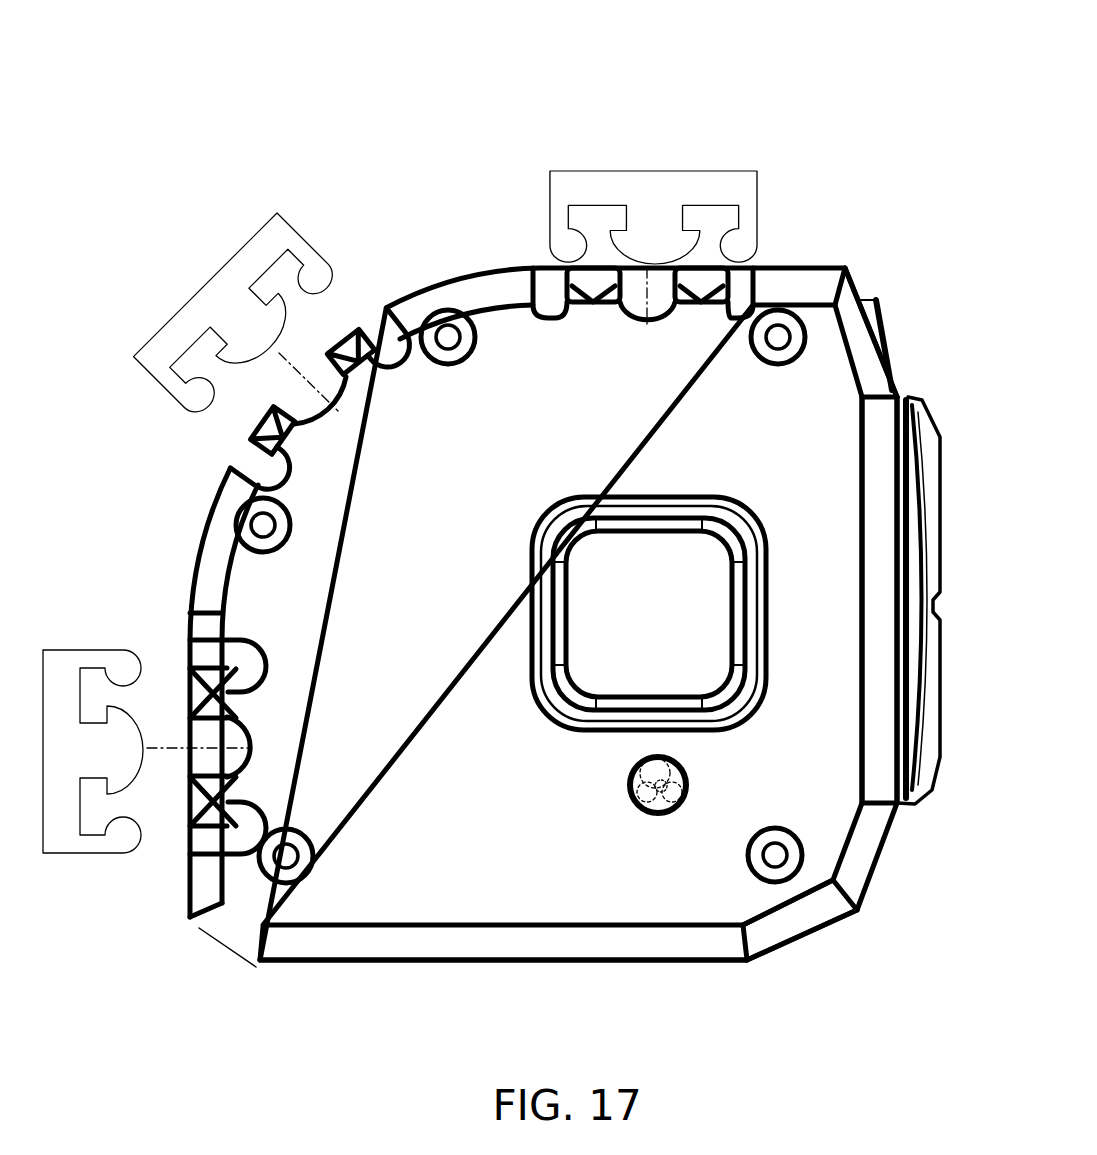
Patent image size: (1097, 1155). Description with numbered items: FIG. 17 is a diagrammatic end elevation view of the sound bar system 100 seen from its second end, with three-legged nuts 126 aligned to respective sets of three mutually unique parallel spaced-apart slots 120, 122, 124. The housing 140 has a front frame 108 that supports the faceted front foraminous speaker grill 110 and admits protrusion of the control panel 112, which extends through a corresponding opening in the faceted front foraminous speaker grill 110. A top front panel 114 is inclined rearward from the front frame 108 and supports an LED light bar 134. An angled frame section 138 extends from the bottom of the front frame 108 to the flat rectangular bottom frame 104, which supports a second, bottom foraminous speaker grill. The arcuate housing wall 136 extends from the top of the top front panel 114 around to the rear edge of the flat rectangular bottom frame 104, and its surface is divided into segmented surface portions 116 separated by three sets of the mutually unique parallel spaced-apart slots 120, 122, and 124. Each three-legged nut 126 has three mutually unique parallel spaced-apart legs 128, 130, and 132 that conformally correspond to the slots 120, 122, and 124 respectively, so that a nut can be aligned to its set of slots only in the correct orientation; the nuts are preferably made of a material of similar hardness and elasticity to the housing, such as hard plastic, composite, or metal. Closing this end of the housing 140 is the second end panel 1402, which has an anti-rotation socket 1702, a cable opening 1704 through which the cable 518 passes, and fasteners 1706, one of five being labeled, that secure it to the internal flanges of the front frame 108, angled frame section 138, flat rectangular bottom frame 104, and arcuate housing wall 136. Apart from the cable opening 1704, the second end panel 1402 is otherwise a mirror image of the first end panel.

The sound bar system 100 is at (845, 33).
The flat rectangular bottom frame 104 is at (565, 943).
The front frame 108 is at (877, 452).
The faceted front foraminous speaker grill 110 is at (907, 590).
The control panel 112 is at (937, 703).
The top front panel 114 is at (858, 328).
The segmented surface portions 116 is at (468, 267).
The slot 120 is at (212, 742).
The slot 122 is at (234, 658).
The slot 124 is at (230, 836).
The three-legged nut 126 is at (651, 190).
The leg 128 is at (120, 752).
The leg 130 is at (120, 835).
The leg 132 is at (126, 663).
The LED light bar 134 is at (888, 323).
The arcuate housing wall 136 is at (398, 232).
The angled frame section 138 is at (876, 928).
The housing 140 is at (645, 990).
The cable 518 is at (667, 780).
The second end panel 1402 is at (408, 887).
The anti-rotation socket 1702 is at (717, 645).
The cable opening 1704 is at (688, 767).
The fasteners 1706 is at (778, 854).